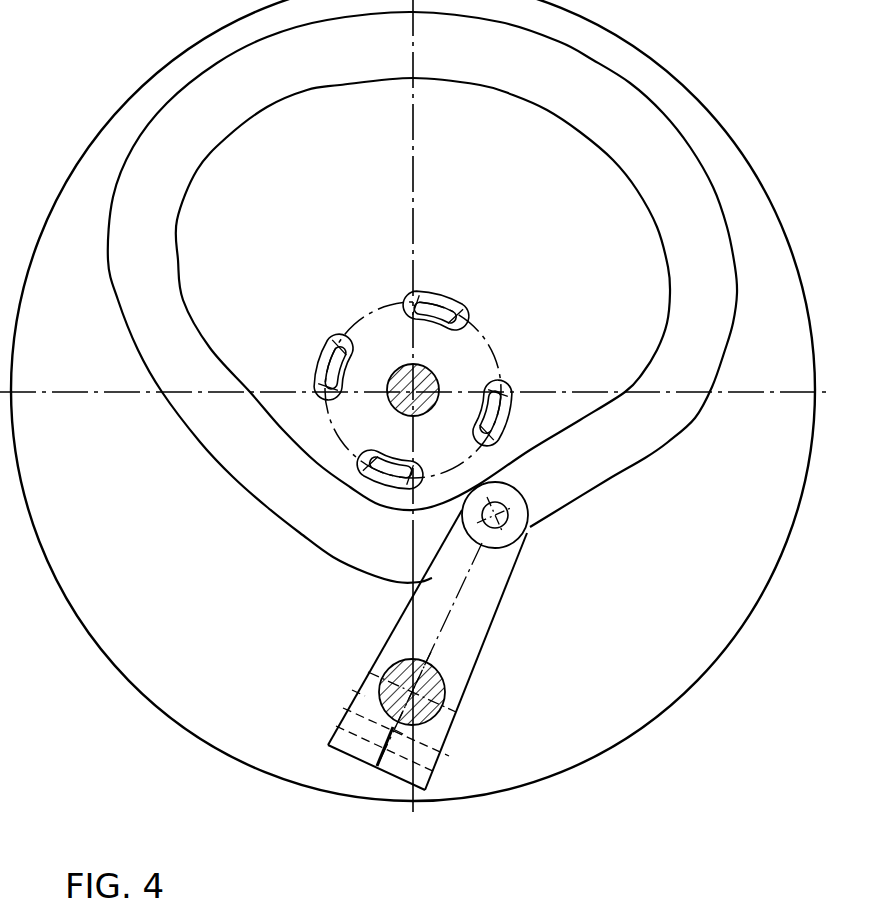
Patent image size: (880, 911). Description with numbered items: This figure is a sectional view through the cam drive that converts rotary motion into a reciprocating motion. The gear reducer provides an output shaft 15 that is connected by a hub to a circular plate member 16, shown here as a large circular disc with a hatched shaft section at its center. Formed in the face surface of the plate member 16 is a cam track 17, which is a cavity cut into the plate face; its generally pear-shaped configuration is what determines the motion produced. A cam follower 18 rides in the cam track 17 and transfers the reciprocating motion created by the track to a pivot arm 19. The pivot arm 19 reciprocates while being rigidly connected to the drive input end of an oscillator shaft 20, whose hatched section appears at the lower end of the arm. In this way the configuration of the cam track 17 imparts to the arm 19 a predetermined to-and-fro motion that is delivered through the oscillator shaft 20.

The output shaft 15 is at (438, 375).
The circular plate member 16 is at (695, 682).
The cam track 17 is at (672, 443).
The cam follower 18 is at (507, 483).
The pivot arm 19 is at (497, 612).
The oscillator shaft 20 is at (445, 690).